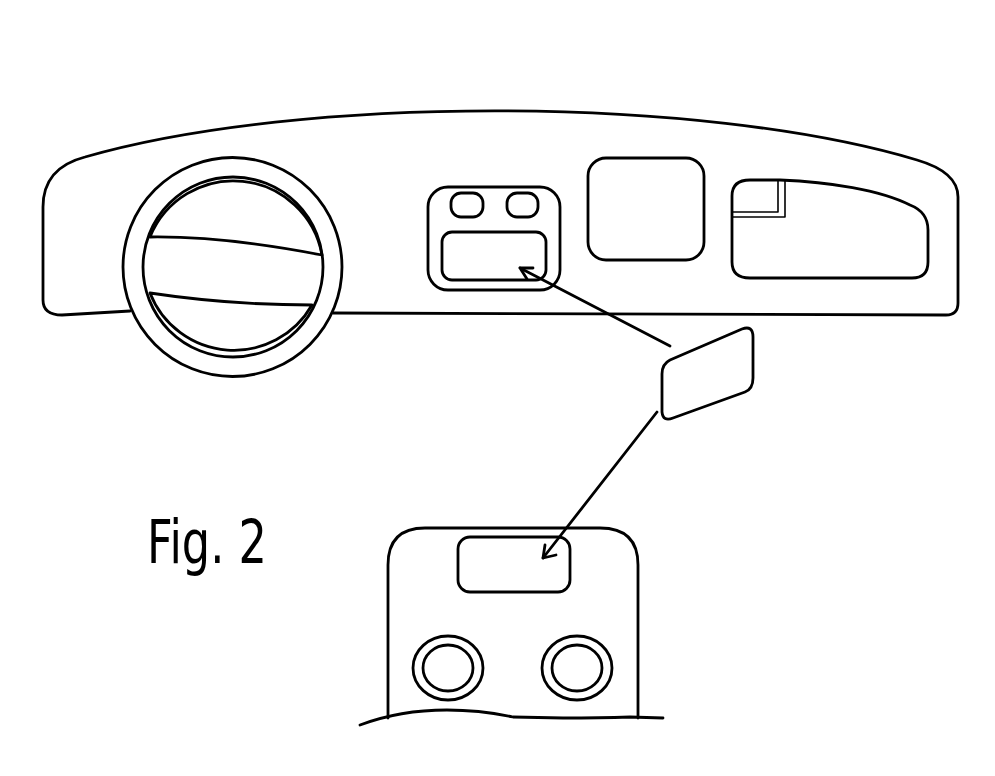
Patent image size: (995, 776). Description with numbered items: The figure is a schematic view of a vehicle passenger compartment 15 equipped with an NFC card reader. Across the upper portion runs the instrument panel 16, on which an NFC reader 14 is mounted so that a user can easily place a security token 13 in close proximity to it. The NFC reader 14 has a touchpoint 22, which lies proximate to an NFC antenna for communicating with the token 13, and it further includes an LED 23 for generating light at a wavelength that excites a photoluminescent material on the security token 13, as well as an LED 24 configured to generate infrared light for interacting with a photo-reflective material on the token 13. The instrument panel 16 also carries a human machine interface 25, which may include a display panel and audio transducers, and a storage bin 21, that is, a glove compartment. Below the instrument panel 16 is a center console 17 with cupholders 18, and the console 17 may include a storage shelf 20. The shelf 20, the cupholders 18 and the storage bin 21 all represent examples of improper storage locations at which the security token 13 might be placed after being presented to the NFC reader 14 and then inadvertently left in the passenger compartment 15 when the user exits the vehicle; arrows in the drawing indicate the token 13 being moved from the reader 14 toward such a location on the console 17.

The security token 13 is at (733, 360).
The NFC reader 14 is at (470, 290).
The passenger compartment 15 is at (822, 545).
The instrument panel 16 is at (295, 148).
The center console 17 is at (637, 550).
The cupholders 18 is at (413, 660).
The storage shelf 20 is at (480, 540).
The storage bin 21 is at (857, 190).
The touchpoint 22 is at (460, 270).
The LED 23 is at (460, 192).
The LED 24 is at (527, 193).
The human machine interface 25 is at (667, 158).